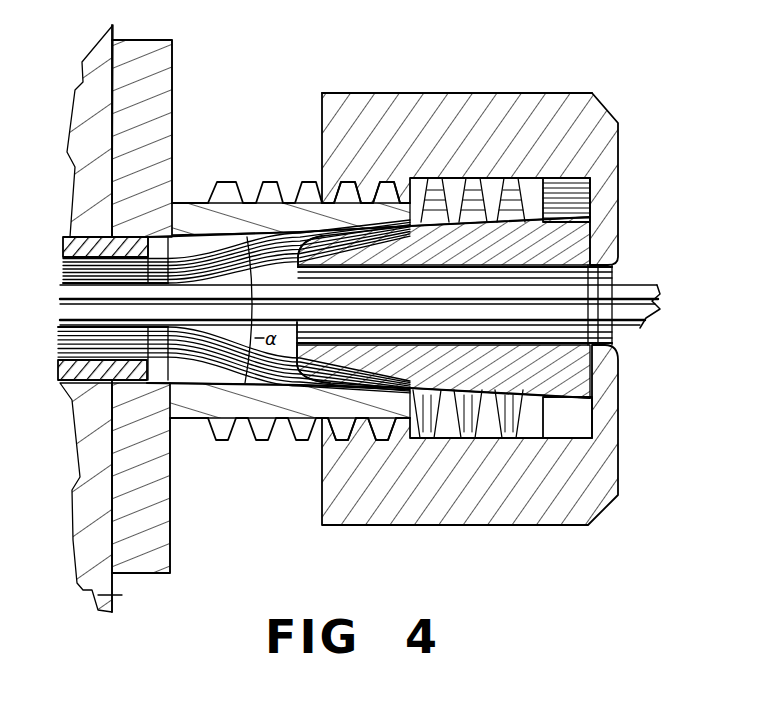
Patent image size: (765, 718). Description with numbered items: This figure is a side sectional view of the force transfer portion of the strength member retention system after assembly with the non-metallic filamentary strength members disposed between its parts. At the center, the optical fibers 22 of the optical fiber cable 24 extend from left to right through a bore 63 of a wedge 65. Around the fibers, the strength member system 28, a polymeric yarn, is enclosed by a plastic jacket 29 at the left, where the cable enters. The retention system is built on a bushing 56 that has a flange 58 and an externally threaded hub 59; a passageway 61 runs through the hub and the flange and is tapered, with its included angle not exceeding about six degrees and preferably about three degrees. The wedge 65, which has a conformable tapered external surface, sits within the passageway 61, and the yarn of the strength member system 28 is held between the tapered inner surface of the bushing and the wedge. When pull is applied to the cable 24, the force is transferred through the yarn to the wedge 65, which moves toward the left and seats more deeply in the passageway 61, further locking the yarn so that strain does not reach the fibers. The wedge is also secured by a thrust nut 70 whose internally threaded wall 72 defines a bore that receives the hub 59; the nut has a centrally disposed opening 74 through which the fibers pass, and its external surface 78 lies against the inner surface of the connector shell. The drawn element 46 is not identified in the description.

The optical fibers 22 is at (638, 326).
The optical fiber cable 24 is at (58, 383).
The strength member system 28 is at (292, 240).
The jacket 29 is at (68, 252).
The housing wall 46 is at (122, 599).
The bushing 56 is at (175, 58).
The flange 58 is at (163, 132).
The hub 59 is at (220, 412).
The passageway 61 is at (208, 233).
The bore 63 is at (299, 278).
The wedge 65 is at (580, 240).
The thrust nut 70 is at (550, 103).
The internally threaded wall 72 is at (352, 427).
The centrally disposed opening 74 is at (613, 279).
The external surface 78 is at (466, 92).